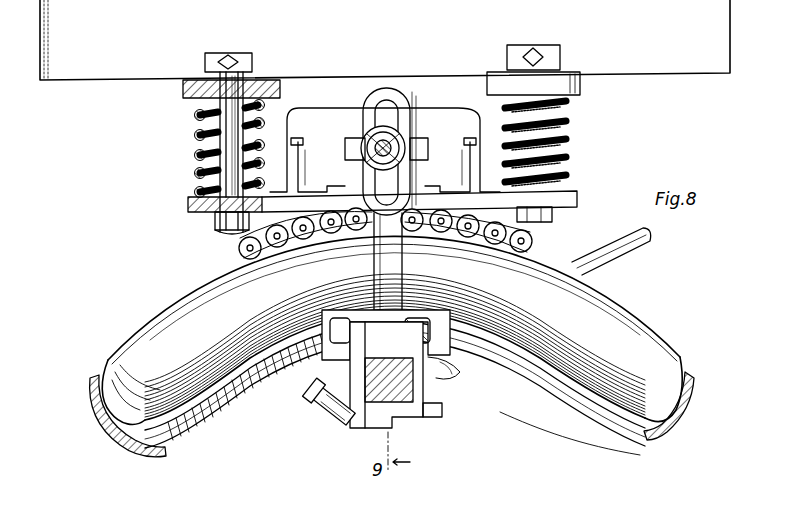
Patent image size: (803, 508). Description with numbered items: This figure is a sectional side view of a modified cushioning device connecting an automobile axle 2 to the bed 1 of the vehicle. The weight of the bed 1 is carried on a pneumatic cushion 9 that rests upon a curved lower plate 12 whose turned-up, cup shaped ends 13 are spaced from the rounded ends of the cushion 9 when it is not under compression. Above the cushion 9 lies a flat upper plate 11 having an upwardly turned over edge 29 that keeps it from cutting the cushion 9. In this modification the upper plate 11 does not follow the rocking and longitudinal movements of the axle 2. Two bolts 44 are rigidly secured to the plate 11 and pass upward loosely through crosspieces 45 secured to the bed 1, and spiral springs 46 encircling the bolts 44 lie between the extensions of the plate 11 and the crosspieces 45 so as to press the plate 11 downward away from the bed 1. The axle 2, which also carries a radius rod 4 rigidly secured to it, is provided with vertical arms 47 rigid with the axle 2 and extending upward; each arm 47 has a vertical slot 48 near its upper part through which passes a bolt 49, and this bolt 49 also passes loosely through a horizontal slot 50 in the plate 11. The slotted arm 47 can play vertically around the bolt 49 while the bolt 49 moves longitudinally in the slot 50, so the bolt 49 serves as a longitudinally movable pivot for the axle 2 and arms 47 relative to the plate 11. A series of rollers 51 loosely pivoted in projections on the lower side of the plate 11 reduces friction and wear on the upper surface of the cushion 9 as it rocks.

The bed 1 is at (730, 18).
The axle 2 is at (410, 390).
The radius rod 4 is at (626, 250).
The pneumatic cushion 9 is at (642, 324).
The upper plate 11 is at (318, 125).
The lower plate 12 is at (540, 376).
The cup shaped end 13 is at (93, 405).
The turned over edge 29 is at (630, 430).
The bolt 44 is at (230, 143).
The crosspiece 45 is at (183, 92).
The spiral spring 46 is at (205, 190).
The vertical arm 47 is at (398, 258).
The vertical slot 48 is at (388, 113).
The bolt 49 is at (372, 143).
The horizontal slot 50 is at (418, 150).
The roller 51 is at (238, 247).